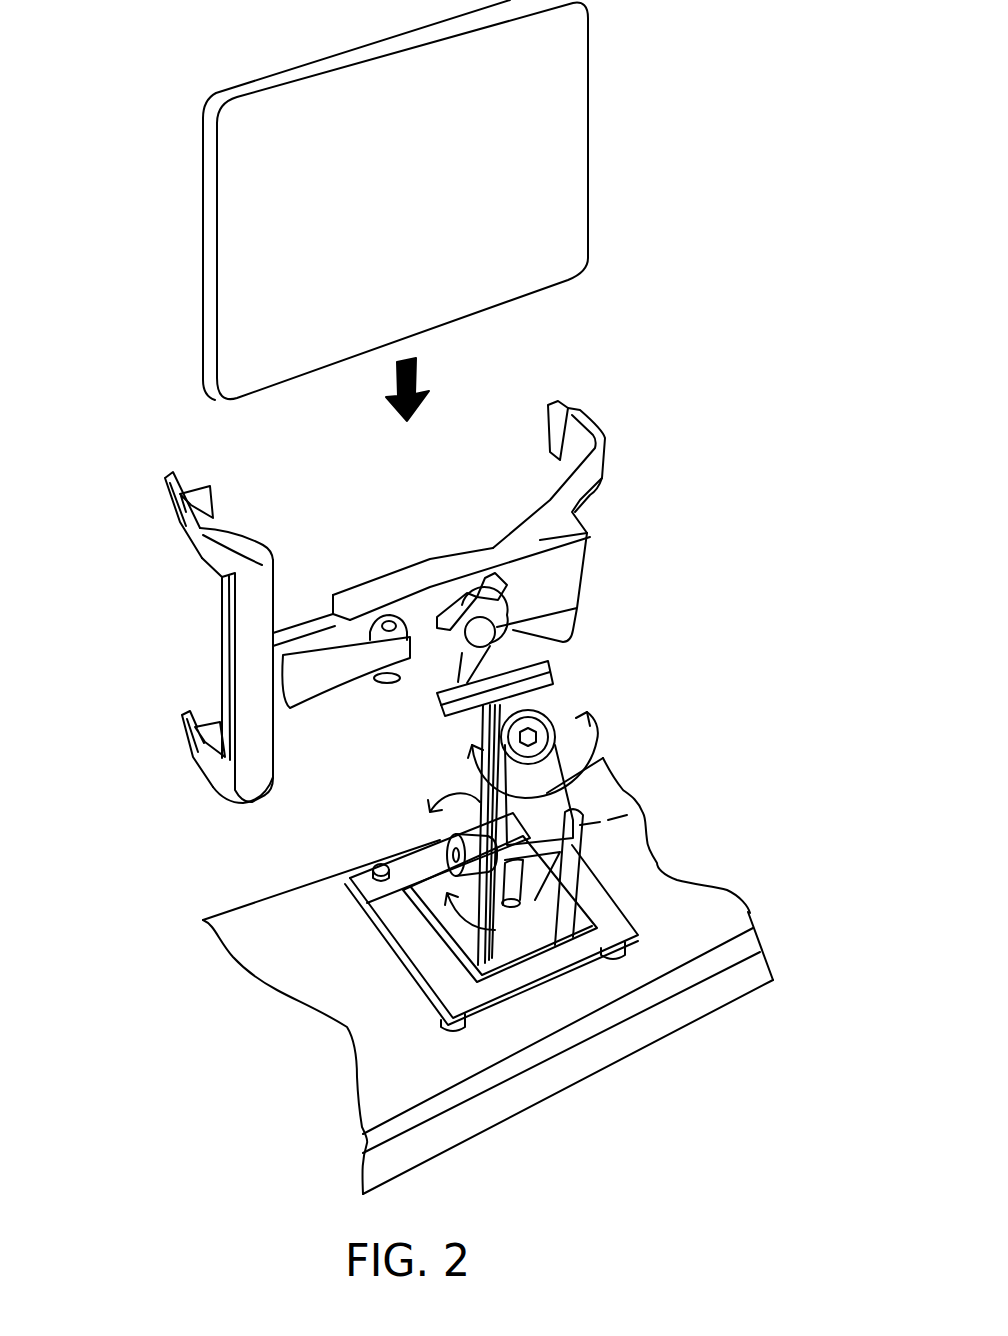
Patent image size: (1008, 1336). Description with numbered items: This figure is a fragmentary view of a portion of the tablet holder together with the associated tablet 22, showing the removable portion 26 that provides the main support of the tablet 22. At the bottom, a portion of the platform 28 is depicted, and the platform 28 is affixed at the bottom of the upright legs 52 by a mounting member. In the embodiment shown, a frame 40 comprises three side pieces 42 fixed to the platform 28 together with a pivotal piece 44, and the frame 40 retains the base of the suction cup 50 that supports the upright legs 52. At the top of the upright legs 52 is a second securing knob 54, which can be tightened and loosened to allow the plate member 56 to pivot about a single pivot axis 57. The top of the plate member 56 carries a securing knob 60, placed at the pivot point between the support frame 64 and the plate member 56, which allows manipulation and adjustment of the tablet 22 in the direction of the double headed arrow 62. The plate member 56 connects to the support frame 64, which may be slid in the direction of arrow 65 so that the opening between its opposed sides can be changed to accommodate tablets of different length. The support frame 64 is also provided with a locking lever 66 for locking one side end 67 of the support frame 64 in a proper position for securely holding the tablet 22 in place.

The tablet 22 is at (419, 207).
The removable portion 26 is at (750, 912).
The platform 28 is at (283, 960).
The frame 40 is at (374, 922).
The side pieces 42 is at (448, 1020).
The pivotal piece 44 is at (413, 862).
The suction cup 50 is at (517, 950).
The upright legs 52 is at (400, 985).
The second securing knob 54 is at (480, 812).
The plate member 56 is at (543, 820).
The pivot axis 57 is at (598, 823).
The securing knob 60 is at (543, 728).
The double headed arrow 62 is at (588, 738).
The support frame 64 is at (207, 640).
The arrow 65 is at (607, 573).
The locking lever 66 is at (315, 677).
The side end 67 is at (241, 550).